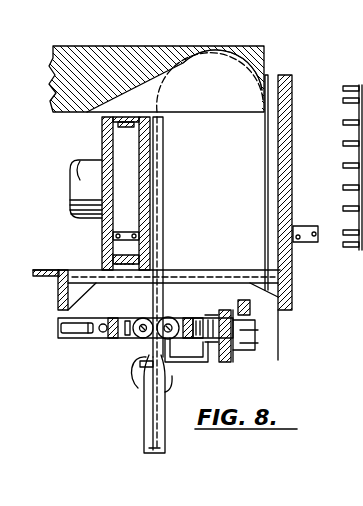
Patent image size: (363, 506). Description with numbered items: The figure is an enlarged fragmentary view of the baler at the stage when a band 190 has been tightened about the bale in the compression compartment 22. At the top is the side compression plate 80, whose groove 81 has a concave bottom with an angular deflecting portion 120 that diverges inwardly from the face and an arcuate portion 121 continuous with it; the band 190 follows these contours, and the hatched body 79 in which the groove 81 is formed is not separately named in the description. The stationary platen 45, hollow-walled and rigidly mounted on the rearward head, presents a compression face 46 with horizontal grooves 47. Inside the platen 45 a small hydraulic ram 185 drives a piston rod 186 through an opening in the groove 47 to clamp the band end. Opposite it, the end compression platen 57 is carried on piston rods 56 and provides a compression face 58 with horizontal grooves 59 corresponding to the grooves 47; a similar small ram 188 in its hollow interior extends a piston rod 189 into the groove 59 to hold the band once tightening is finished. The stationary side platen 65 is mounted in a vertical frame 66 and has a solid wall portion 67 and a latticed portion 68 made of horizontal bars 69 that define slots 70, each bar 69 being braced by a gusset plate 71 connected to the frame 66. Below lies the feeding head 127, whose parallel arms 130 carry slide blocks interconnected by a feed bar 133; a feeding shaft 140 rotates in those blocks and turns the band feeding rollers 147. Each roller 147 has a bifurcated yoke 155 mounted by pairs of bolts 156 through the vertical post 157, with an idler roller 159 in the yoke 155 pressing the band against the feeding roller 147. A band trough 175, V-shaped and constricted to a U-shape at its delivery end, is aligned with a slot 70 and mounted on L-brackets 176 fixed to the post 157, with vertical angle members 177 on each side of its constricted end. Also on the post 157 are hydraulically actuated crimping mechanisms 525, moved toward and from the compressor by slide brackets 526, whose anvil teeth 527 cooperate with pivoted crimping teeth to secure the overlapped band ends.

The cylinder head block 79 is at (115, 44).
The angular deflecting portion 120 is at (143, 72).
The arcuate portion 121 is at (228, 50).
The band 190 is at (256, 97).
The groove 81 is at (180, 98).
The side compression plate 80 is at (78, 113).
The compression compartment 22 is at (280, 70).
The platen 45 is at (295, 105).
The compression face 46 is at (266, 142).
The horizontal grooves 47 is at (277, 168).
The end compression platen 57 is at (172, 162).
The compression face 58 is at (160, 188).
The horizontal grooves 59 is at (158, 207).
The hydraulic ram 188 is at (117, 242).
The piston rod 189 is at (156, 247).
The piston rods 56 is at (88, 182).
The latticed portion 68 is at (96, 275).
The solid wall portion 67 is at (50, 270).
The vertical frame 66 is at (60, 303).
The gusset plate 71 is at (72, 290).
The side platen 65 is at (59, 259).
The slots 70 is at (204, 279).
The horizontal bars 69 is at (257, 271).
The hydraulic ram 185 is at (311, 243).
The piston rod 186 is at (290, 228).
The arms 130 is at (82, 340).
The feeding shaft 140 is at (144, 318).
The band feeding rollers 147 is at (142, 338).
The feed bar 133 is at (122, 318).
The bifurcated yoke 155 is at (192, 318).
The bolts 156 is at (198, 318).
The vertical post 157 is at (211, 357).
The crimping mechanisms 525 is at (245, 331).
The anvil teeth 527 is at (250, 303).
The slide brackets 526 is at (232, 349).
The L-brackets 176 is at (205, 350).
The idler roller 159 is at (170, 341).
The vertical angle members 177 is at (165, 392).
The feeding head 127 is at (119, 371).
The band trough 175 is at (148, 432).